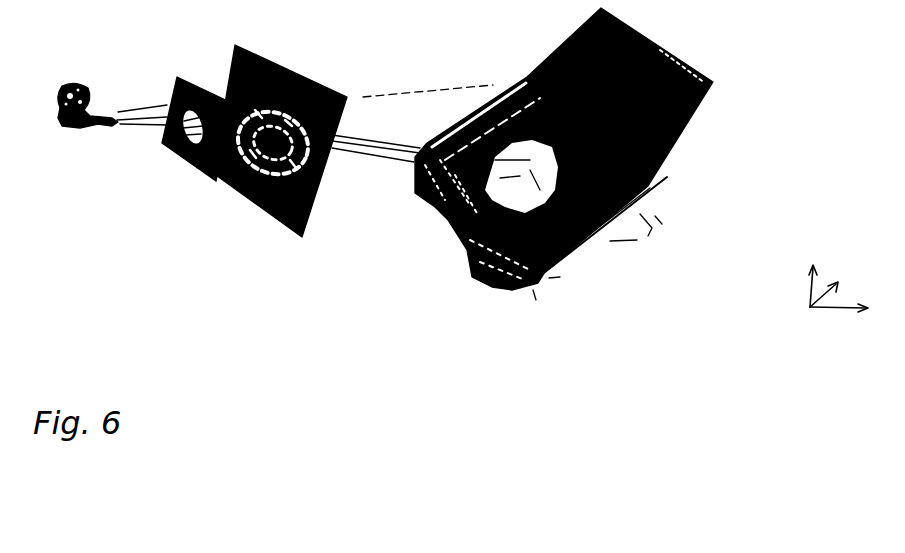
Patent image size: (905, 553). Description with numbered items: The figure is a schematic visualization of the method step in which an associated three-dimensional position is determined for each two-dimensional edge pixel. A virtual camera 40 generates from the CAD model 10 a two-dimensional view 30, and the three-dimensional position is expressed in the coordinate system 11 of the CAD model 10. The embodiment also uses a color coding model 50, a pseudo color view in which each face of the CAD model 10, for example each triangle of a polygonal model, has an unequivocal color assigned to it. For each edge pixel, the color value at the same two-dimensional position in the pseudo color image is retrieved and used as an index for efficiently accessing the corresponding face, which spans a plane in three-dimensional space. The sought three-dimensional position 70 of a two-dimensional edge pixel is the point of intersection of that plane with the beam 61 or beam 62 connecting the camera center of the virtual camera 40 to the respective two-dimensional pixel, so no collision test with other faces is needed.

The CAD model 10 is at (633, 280).
The coordinate system of the CAD model 11 is at (816, 318).
The two-dimensional view 30 is at (337, 83).
The virtual camera 40 is at (61, 138).
The color coding model 50 is at (205, 88).
The beam 61 is at (373, 161).
The beam 62 is at (392, 157).
The 3D position 70 is at (547, 227).